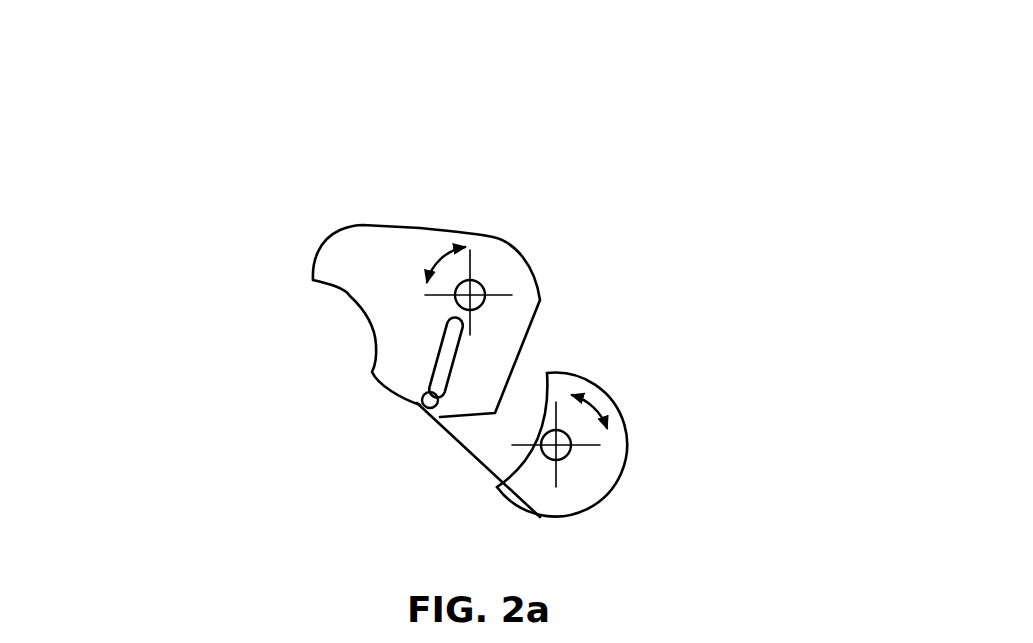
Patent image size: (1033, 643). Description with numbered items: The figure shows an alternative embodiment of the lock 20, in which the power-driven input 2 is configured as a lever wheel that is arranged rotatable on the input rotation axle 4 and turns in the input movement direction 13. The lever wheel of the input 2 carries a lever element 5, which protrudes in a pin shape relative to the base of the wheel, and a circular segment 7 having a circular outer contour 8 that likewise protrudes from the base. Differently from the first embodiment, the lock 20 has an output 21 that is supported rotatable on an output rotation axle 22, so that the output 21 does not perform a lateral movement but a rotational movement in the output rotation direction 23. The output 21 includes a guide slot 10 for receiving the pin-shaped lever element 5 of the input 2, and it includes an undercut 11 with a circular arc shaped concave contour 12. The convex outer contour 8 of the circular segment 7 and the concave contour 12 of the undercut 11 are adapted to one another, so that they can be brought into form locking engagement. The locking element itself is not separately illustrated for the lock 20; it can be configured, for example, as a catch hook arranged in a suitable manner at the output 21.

The lock 20 is at (625, 275).
The output 21 is at (402, 273).
The output rotation axle 22 is at (480, 280).
The output rotation direction 23 is at (437, 267).
The undercut 11 is at (350, 308).
The concave contour 12 is at (365, 333).
The guide slot 10 is at (447, 348).
The lever element 5 is at (430, 402).
The input 2 is at (528, 407).
The circular outer contour 8 is at (632, 463).
The circular segment 7 is at (537, 488).
The input rotation axle 4 is at (572, 458).
The input movement direction 13 is at (605, 392).